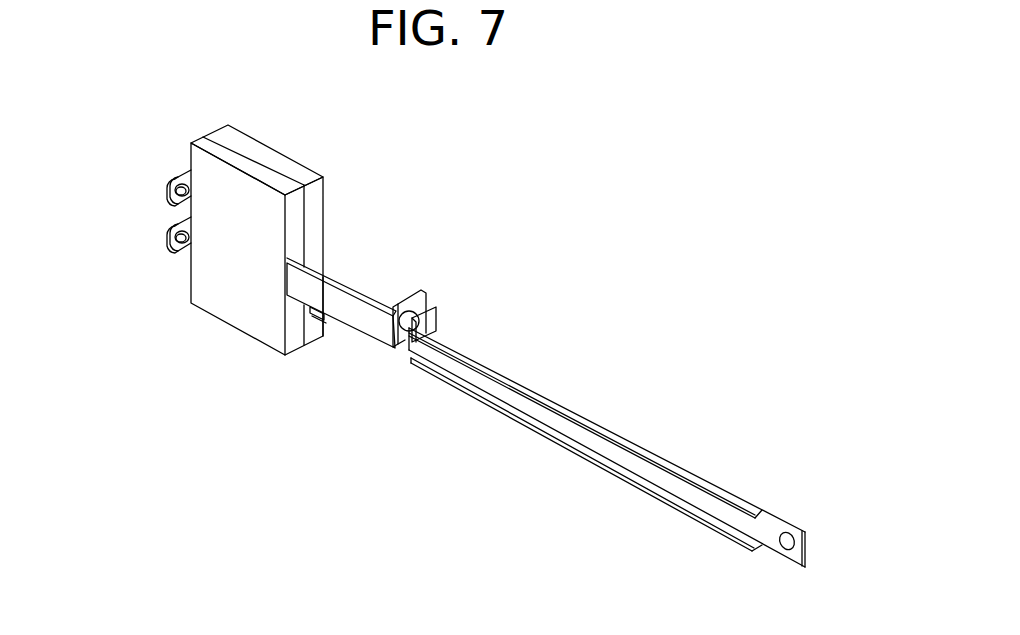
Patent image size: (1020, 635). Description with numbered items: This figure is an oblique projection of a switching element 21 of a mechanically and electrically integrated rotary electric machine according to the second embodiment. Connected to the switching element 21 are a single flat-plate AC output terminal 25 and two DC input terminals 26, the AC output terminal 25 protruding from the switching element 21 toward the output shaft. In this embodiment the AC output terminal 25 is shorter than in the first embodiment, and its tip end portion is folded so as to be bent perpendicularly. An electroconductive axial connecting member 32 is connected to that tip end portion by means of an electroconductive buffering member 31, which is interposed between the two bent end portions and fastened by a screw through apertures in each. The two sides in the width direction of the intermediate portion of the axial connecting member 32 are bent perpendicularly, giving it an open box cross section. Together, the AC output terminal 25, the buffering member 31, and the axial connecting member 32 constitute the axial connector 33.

The switching element 21 is at (228, 288).
The AC output terminal 25 is at (370, 318).
The DC input terminals 26 is at (168, 182).
The buffering member 31 is at (397, 310).
The axial connecting member 32 is at (535, 408).
The axial connector 33 is at (508, 370).